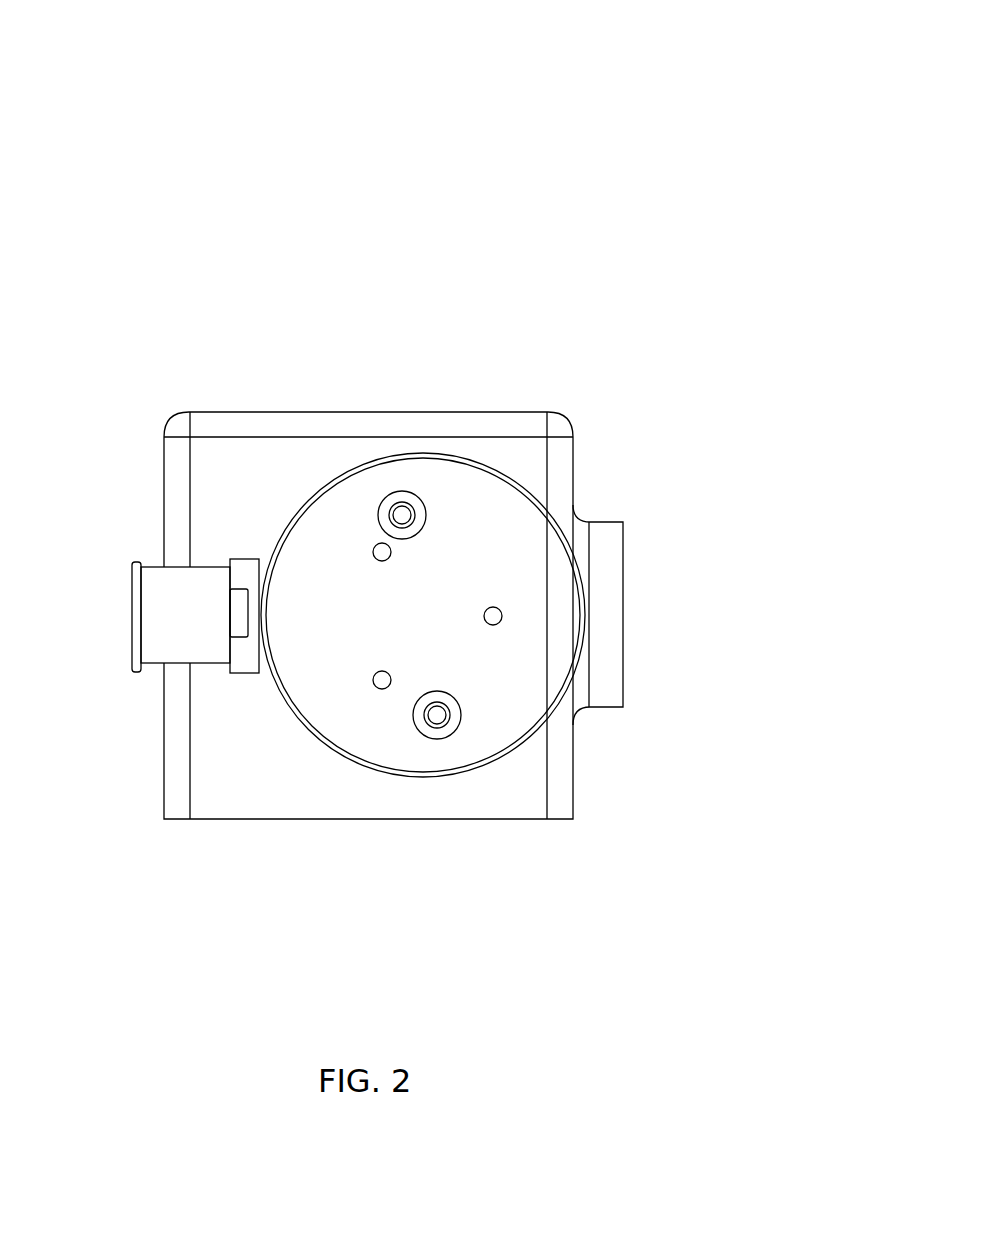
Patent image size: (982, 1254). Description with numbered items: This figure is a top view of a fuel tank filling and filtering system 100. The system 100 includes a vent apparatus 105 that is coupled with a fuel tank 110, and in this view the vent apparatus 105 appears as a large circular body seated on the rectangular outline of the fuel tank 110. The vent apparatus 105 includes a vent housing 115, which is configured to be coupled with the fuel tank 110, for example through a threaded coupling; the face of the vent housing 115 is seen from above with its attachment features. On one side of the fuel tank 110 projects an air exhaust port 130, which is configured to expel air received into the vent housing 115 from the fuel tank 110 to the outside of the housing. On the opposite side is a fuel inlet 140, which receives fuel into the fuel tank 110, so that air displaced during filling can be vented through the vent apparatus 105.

The fuel tank filling and filtering system 100 is at (746, 48).
The vent apparatus 105 is at (340, 475).
The fuel tank 110 is at (572, 764).
The vent housing 115 is at (480, 518).
The air exhaust port 130 is at (132, 567).
The fuel inlet 140 is at (623, 707).